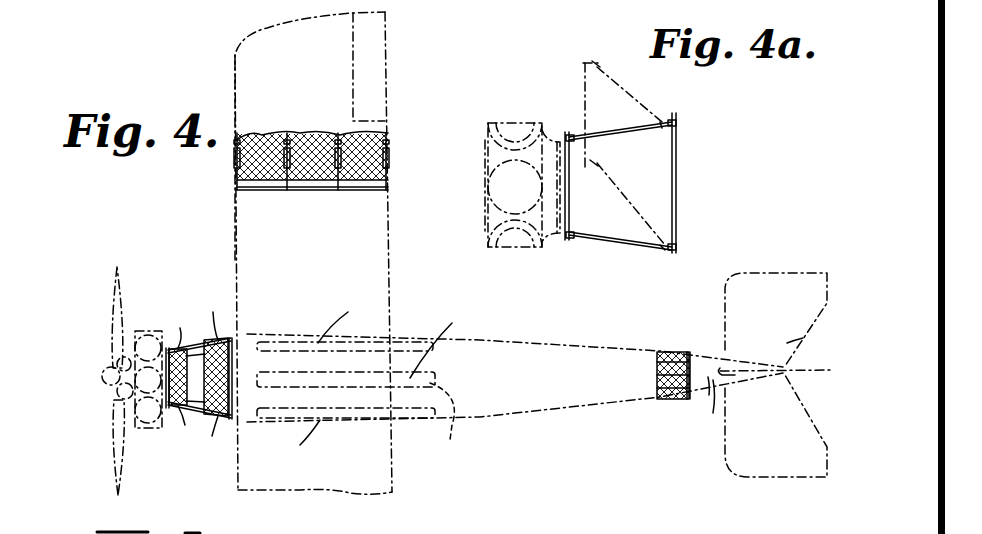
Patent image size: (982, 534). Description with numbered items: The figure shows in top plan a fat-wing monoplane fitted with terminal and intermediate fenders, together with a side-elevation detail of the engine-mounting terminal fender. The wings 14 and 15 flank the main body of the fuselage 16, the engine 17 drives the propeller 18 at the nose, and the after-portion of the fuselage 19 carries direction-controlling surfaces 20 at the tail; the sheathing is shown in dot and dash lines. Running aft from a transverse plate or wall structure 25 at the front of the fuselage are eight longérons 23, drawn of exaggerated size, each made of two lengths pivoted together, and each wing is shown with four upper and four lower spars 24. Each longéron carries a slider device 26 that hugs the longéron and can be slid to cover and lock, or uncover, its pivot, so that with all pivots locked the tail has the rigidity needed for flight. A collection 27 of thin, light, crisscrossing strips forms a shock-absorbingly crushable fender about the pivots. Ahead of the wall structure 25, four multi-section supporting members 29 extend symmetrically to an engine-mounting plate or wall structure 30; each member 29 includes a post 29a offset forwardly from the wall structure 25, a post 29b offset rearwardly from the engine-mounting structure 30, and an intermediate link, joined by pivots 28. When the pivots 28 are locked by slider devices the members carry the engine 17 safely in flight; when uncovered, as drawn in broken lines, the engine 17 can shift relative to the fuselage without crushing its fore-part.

In FIG. 4, the wing 14 is at (372, 282).
In FIG. 4, the wing 15 is at (377, 466).
In FIG. 4, the main body of the fuselage 16 is at (548, 356).
In FIG. 4, the engine 17 is at (140, 348).
In FIG. 4A, the engine 17 is at (505, 185).
In FIG. 4, the propeller 18 is at (120, 407).
In FIG. 4, the after-portion of the fuselage 19 is at (712, 403).
In FIG. 4, the direction-controlling surfaces 20 is at (780, 368).
In FIG. 4, the longérons 23 is at (283, 133).
In FIG. 4, the wing spars 24 is at (233, 345).
In FIG. 4, the transverse plate or wall structure 25 is at (228, 338).
In FIG. 4A, the transverse plate or wall structure 25 is at (676, 178).
In FIG. 4, the slider device 26 is at (368, 135).
In FIG. 4, the collection of structural strips 27 is at (312, 165).
In FIG. 4A, the pivots 28 is at (598, 66).
In FIG. 4, the supporting member 29 is at (195, 345).
In FIG. 4A, the supporting member 29 is at (600, 135).
In FIG. 4A, the post 29a is at (676, 124).
In FIG. 4A, the post 29b is at (570, 135).
In FIG. 4, the engine-mounting plate or wall structure 30 is at (169, 352).
In FIG. 4A, the engine-mounting plate or wall structure 30 is at (569, 200).